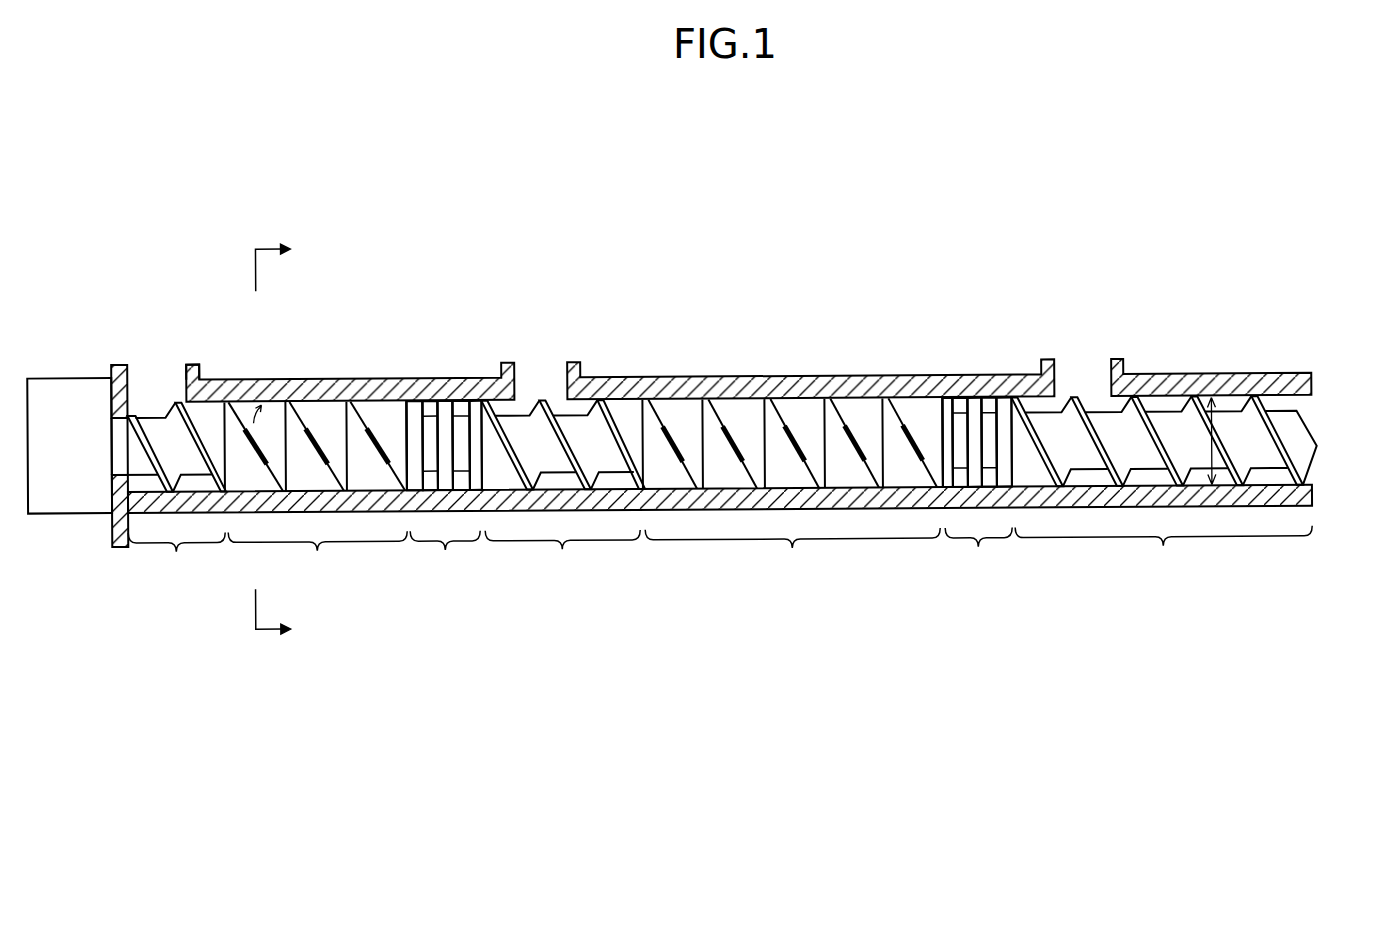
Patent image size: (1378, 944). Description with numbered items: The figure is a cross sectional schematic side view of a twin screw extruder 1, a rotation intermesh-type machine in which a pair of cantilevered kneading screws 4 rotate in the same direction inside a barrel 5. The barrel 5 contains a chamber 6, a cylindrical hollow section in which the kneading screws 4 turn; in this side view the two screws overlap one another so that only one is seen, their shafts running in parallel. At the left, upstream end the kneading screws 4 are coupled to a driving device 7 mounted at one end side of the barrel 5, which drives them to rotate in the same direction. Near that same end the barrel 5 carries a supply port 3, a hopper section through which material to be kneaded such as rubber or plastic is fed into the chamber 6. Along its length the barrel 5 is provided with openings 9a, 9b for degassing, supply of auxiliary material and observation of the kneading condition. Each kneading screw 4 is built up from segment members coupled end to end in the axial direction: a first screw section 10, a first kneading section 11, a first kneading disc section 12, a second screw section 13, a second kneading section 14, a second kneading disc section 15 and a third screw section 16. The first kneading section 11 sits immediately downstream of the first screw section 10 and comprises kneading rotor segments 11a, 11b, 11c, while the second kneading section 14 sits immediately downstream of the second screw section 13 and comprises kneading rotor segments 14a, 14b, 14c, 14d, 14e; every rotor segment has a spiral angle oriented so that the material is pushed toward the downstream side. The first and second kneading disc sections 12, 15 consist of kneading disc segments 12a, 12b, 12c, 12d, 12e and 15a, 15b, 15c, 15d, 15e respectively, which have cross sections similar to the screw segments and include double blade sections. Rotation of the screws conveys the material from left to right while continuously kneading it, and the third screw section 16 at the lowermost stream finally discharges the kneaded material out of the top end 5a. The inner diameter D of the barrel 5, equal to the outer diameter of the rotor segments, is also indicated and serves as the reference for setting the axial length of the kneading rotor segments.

The twin screw extruder 1 is at (1186, 308).
The supply port 3 is at (720, 383).
The kneading screws 4 is at (110, 447).
The barrel 5 is at (297, 402).
The top end 5a is at (1317, 402).
The chamber 6 is at (206, 380).
The driving device 7 is at (78, 379).
The opening 9a is at (537, 357).
The opening 9b is at (1082, 378).
The first screw section 10 is at (168, 496).
The first kneading section 11 is at (316, 432).
The kneading rotor segment 11a is at (266, 404).
The kneading rotor segment 11b is at (304, 410).
The kneading rotor segment 11c is at (352, 410).
The first kneading disc section 12 is at (429, 434).
The kneading disc segment 12a is at (414, 405).
The kneading disc segment 12b is at (430, 408).
The kneading disc segment 12c is at (445, 405).
The kneading disc segment 12d is at (461, 405).
The kneading disc segment 12e is at (477, 405).
The second screw section 13 is at (563, 497).
The second kneading section 14 is at (785, 444).
The kneading rotor segment 14a is at (668, 405).
The kneading rotor segment 14b is at (724, 405).
The kneading rotor segment 14c is at (780, 405).
The kneading rotor segment 14d is at (832, 405).
The kneading rotor segment 14e is at (890, 405).
The second kneading disc section 15 is at (954, 431).
The kneading disc segment 15a is at (946, 405).
The kneading disc segment 15b is at (958, 408).
The kneading disc segment 15c is at (975, 408).
The kneading disc segment 15d is at (987, 408).
The kneading disc segment 15e is at (1003, 408).
The third screw section 16 is at (1192, 451).
The inner diameter D is at (1214, 402).